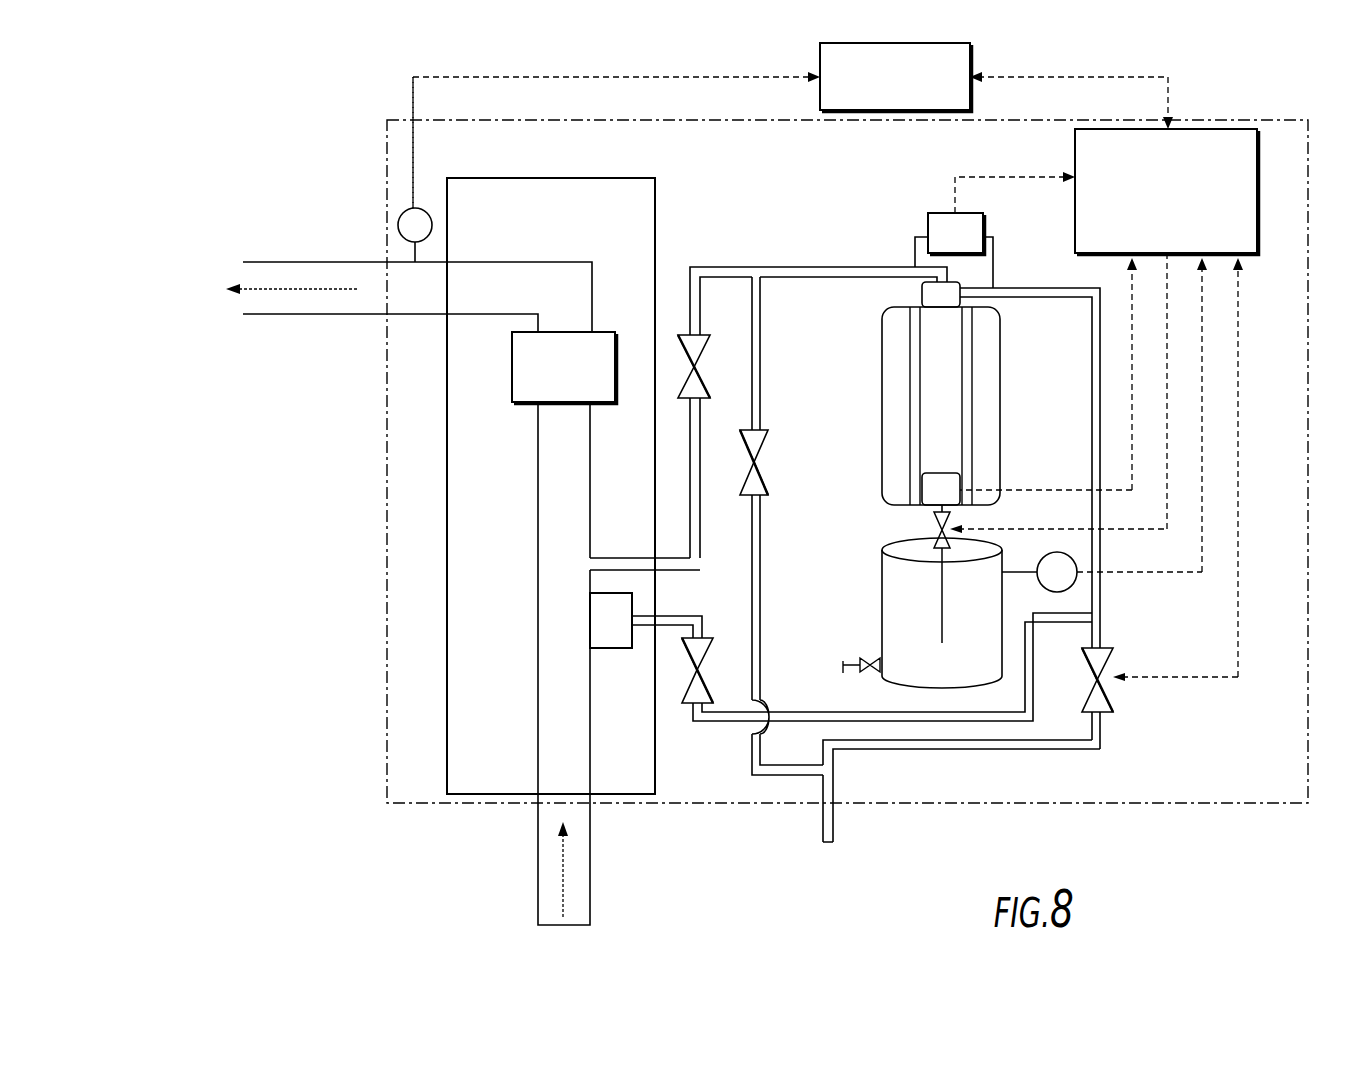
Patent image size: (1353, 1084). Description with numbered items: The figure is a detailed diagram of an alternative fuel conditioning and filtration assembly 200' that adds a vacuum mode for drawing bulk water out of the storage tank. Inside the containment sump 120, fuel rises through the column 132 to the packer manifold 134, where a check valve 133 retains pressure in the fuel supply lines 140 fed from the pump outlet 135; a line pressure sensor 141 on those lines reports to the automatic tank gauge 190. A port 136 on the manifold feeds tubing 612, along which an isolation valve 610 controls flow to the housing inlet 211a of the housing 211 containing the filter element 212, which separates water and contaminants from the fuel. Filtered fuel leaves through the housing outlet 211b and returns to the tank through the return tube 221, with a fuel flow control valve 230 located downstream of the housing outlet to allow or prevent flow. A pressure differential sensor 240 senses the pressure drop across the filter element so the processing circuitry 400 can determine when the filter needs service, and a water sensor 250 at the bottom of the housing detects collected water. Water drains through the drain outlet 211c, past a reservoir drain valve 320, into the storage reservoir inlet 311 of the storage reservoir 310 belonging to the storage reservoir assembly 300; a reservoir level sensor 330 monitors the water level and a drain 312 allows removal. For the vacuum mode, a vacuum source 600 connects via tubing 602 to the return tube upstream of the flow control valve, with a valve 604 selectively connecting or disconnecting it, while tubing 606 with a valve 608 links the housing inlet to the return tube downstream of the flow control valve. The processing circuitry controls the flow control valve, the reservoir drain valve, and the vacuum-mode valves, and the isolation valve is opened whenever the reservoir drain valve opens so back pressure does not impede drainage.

The containment sump 120 is at (384, 693).
The column 132 is at (538, 890).
The check valve 133 is at (512, 367).
The packer manifold 134 is at (447, 530).
The pump outlet 135 is at (468, 315).
The port 136 is at (603, 558).
The fuel supply lines 140 is at (328, 262).
The line pressure sensor 141 is at (402, 214).
The automatic tank gauge 190 is at (937, 91).
The fuel conditioning and filtration assembly 200' is at (1231, 733).
The housing 211 is at (882, 347).
The housing inlet 211a is at (922, 290).
The housing outlet 211b is at (960, 297).
The drain outlet 211c is at (934, 510).
The filter element 212 is at (910, 403).
The return tube 221 is at (912, 752).
The fuel flow control valve 230 is at (1100, 665).
The pressure differential sensor 240 is at (947, 214).
The water sensor 250 is at (933, 473).
The storage reservoir assembly 300 is at (1000, 688).
The storage reservoir 310 is at (922, 680).
The storage reservoir inlet 311 is at (938, 605).
The drain 312 is at (868, 660).
The reservoir drain valve 320 is at (932, 520).
The reservoir level sensor 330 is at (1077, 566).
The processing circuitry 400 is at (1148, 243).
The vacuum source 600 is at (620, 650).
The tubing 602 is at (840, 713).
The valve 604 is at (703, 640).
The tubing 606 is at (760, 397).
The valve 608 is at (768, 485).
The isolation valve 610 is at (705, 385).
The tubing 612 is at (700, 267).